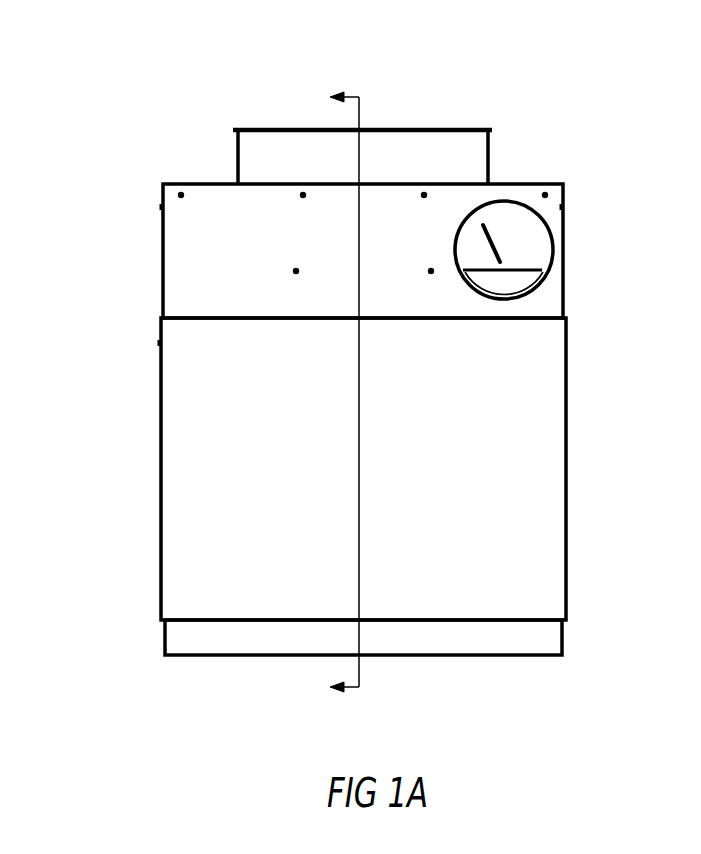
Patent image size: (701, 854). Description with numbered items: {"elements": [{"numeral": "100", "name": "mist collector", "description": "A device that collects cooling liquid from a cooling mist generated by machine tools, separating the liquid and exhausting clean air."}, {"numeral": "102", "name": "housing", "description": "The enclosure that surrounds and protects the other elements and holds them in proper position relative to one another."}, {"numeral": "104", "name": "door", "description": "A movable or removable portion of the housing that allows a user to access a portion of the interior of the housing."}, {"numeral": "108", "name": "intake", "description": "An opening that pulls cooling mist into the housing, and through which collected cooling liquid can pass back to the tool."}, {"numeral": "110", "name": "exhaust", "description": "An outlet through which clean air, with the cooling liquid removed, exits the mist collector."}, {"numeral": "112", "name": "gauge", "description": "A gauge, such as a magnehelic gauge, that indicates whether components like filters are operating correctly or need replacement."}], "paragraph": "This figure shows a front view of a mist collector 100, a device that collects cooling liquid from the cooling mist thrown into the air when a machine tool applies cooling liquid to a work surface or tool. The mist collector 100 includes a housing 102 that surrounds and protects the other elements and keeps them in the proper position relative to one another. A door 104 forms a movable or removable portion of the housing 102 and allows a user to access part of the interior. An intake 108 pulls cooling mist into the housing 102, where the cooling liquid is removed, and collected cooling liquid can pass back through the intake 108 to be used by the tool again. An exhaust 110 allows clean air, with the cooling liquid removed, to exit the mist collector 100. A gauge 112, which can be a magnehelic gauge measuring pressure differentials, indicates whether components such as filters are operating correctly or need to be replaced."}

The cooling apparatus 100 is at (140, 90).
The upper housing section 102 is at (203, 265).
The lower housing body 104 is at (497, 400).
The base 108 is at (522, 642).
The top cap / inlet 110 is at (461, 146).
The gauge 112 is at (530, 235).